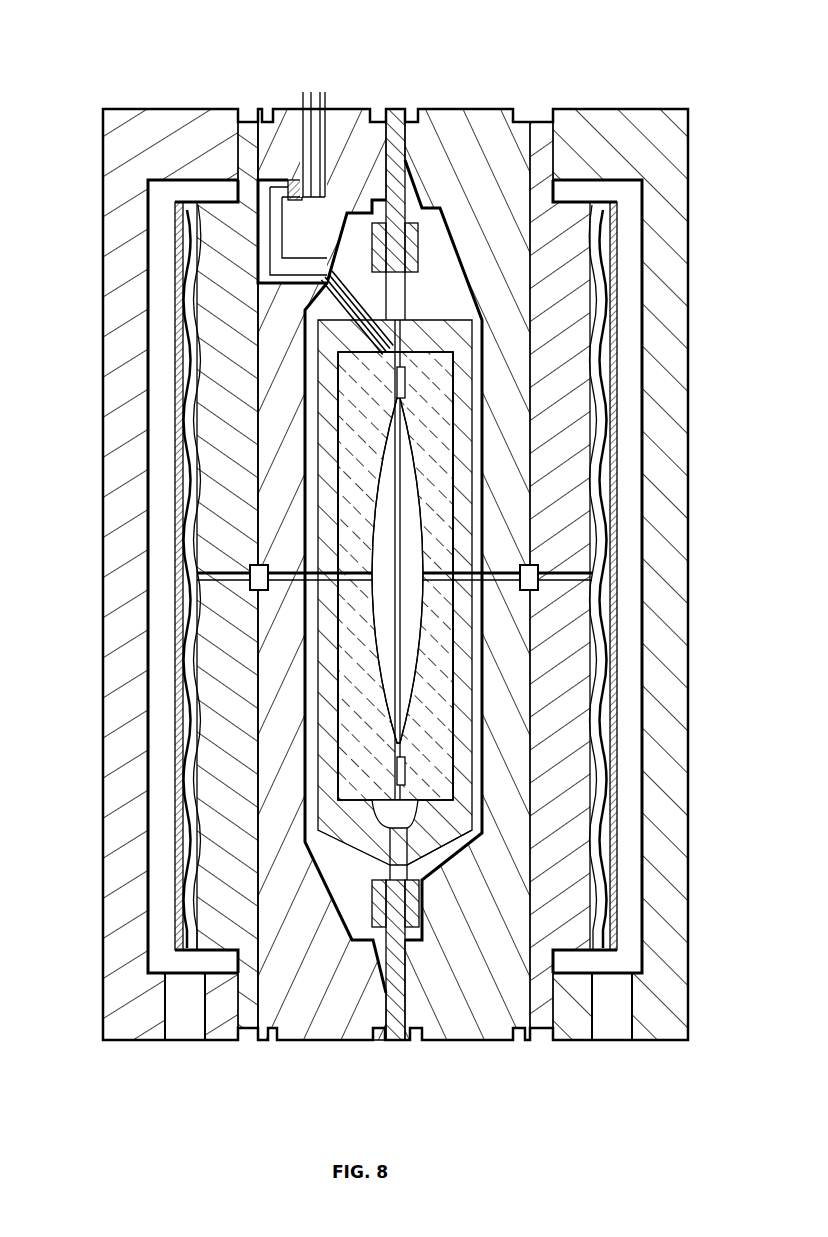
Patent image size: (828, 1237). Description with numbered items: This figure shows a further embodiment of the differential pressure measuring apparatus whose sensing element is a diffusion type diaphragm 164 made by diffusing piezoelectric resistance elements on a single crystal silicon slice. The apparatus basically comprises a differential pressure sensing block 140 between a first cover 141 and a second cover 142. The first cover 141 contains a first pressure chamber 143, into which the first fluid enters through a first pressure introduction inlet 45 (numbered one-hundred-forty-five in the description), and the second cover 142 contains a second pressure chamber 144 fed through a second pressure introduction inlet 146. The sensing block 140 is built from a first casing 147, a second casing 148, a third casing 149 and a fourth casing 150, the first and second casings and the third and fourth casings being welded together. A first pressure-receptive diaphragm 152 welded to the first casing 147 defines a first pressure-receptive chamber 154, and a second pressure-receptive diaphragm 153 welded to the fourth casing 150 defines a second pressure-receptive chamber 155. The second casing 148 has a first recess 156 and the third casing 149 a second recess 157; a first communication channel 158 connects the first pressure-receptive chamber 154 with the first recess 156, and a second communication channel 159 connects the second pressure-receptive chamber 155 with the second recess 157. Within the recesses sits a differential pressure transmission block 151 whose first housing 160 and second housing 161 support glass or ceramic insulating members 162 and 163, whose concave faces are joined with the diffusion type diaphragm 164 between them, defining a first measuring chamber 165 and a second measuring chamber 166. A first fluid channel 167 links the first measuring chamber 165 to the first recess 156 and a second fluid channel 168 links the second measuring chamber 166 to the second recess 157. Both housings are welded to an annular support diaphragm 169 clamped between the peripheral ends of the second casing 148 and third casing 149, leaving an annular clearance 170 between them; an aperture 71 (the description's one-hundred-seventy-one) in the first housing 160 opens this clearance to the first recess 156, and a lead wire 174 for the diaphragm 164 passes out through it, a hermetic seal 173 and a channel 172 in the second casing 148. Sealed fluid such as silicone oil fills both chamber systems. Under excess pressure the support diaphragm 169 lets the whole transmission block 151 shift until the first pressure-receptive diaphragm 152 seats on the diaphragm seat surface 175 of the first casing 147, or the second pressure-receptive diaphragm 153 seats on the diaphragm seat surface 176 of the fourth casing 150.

The differential pressure sensing block 140 is at (462, 110).
The first cover 141 is at (103, 318).
The second cover 142 is at (688, 375).
The first pressure chamber 143 is at (165, 445).
The second pressure chamber 144 is at (625, 495).
The left bottom post 45 is at (202, 1017).
The second pressure introduction inlet 146 is at (595, 1022).
The first casing 147 is at (220, 765).
The second casing 148 is at (357, 1030).
The third casing 149 is at (490, 1023).
The fourth casing 150 is at (572, 768).
The differential pressure transmission block 151 is at (445, 303).
The first pressure-receptive diaphragm 152 is at (183, 705).
The second pressure-receptive diaphragm 153 is at (605, 685).
The first pressure-receptive chamber 154 is at (199, 540).
The second pressure-receptive chamber 155 is at (540, 572).
The first recess 156 is at (303, 383).
The second recess 157 is at (485, 415).
The first communication channel 158 is at (223, 580).
The second communication channel 159 is at (565, 582).
The first housing 160 is at (337, 832).
The second housing 161 is at (447, 835).
The insulating member 162 is at (345, 655).
The insulating member 163 is at (448, 632).
The diffusion type diaphragm 164 is at (445, 468).
The first measuring chamber 165 is at (352, 700).
The second measuring chamber 166 is at (428, 690).
The first fluid channel 167 is at (340, 530).
The second fluid channel 168 is at (445, 548).
The annular support diaphragm 169 is at (398, 170).
The annular clearance 170 is at (393, 858).
The actuator rod 71 is at (362, 300).
The channel 172 is at (325, 135).
The hermetic seal 173 is at (317, 200).
The lead wire 174 is at (303, 105).
The diaphragm seat surface 175 is at (194, 275).
The diaphragm seat surface 176 is at (601, 310).